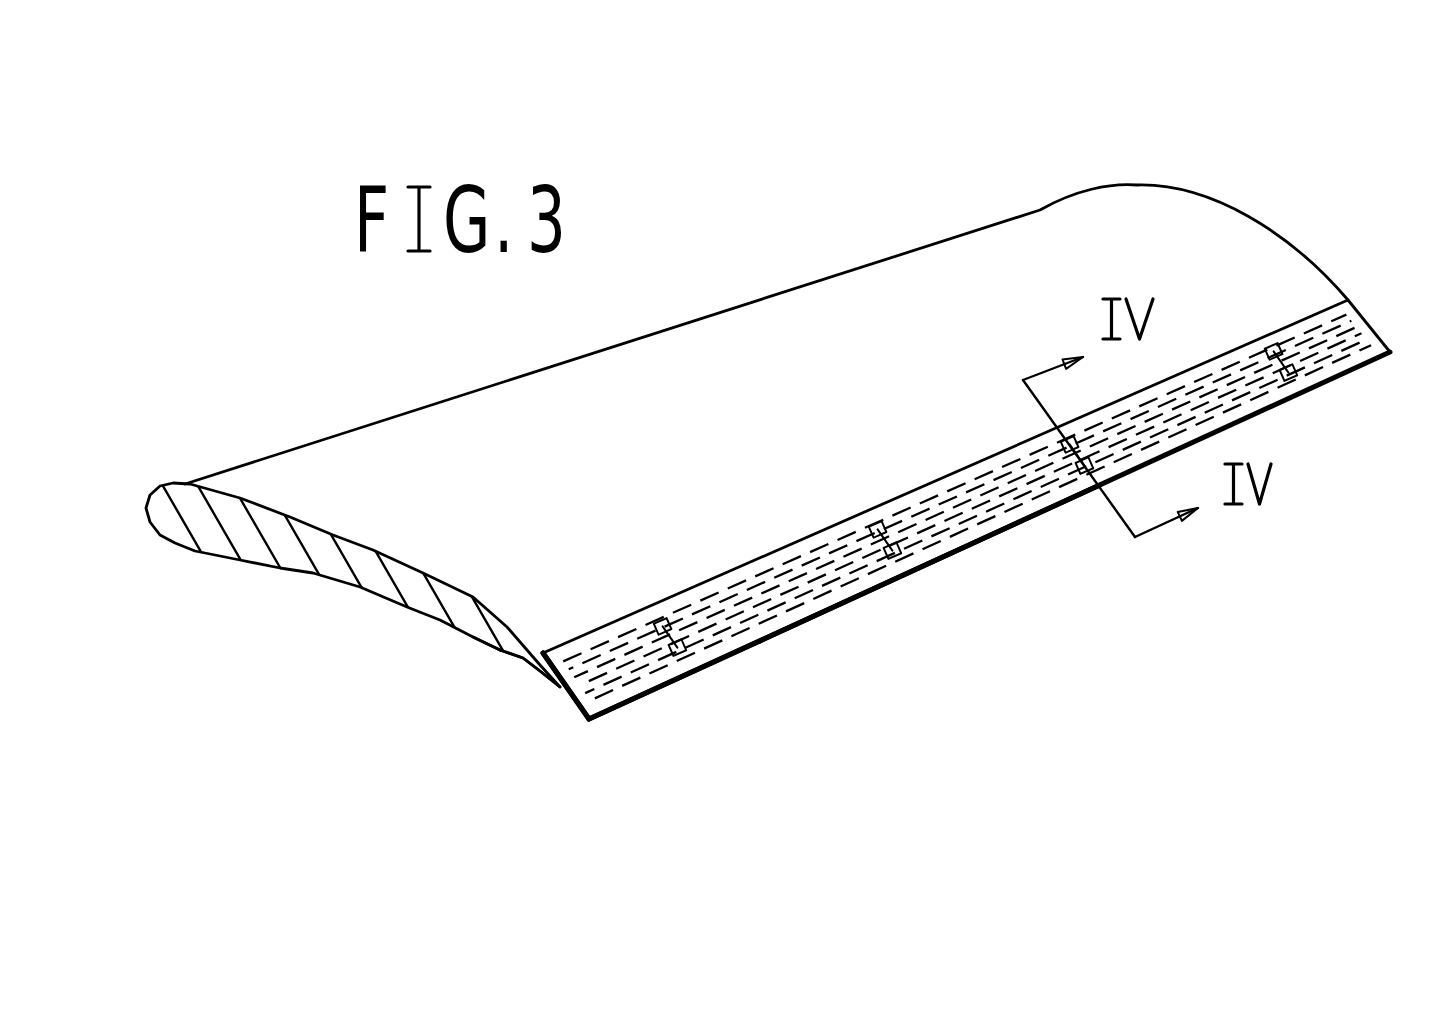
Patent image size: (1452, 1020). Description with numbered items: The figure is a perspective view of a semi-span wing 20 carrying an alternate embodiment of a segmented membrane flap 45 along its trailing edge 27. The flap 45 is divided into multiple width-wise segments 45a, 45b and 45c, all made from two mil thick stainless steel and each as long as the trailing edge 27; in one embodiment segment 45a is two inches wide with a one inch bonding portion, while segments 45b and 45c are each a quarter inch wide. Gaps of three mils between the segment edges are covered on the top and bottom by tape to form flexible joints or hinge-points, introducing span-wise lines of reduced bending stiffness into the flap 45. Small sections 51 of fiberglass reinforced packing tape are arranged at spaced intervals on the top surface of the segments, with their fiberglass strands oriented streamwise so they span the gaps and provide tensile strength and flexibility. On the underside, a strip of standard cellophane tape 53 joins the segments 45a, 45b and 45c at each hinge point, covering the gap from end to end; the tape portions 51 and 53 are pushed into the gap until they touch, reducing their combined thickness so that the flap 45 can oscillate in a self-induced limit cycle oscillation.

The semi-span wing 20 is at (1130, 183).
The trailing edge 27 is at (523, 658).
The flap 45 is at (1343, 257).
The segment 45a is at (500, 650).
The segment 45b is at (587, 703).
The segment 45c is at (663, 687).
The sections of fiberglass reinforced packing tape 51 is at (687, 627).
The tape 53 is at (827, 587).